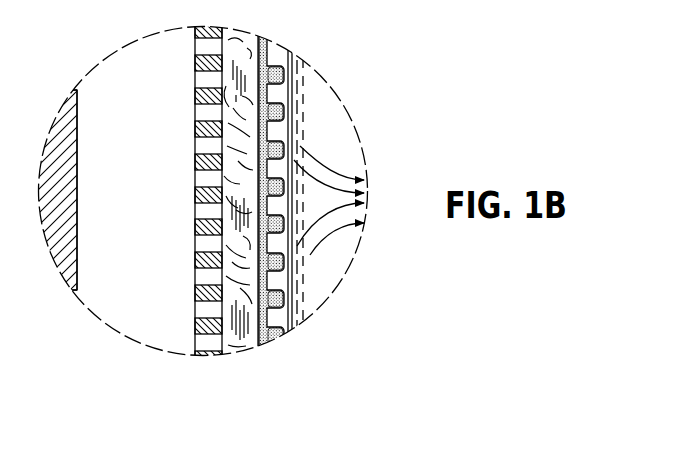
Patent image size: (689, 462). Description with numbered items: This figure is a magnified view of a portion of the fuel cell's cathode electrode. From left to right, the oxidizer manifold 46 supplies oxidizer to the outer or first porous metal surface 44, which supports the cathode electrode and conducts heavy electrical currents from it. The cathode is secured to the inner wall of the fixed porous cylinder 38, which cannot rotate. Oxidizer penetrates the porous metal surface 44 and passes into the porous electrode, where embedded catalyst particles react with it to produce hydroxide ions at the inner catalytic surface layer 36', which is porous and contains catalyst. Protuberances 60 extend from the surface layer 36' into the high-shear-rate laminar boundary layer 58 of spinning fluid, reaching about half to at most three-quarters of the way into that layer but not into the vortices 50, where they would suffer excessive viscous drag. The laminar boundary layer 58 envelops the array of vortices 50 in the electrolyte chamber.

The outer porous metal surface 44 is at (195, 94).
The oxidizer manifold 46 is at (158, 191).
The fixed porous cylinder 38 is at (233, 343).
The cathode surface layer 36' is at (336, 195).
The protuberances 60 is at (297, 113).
The laminar boundary layer 58 is at (289, 68).
The vortices 50 is at (345, 217).